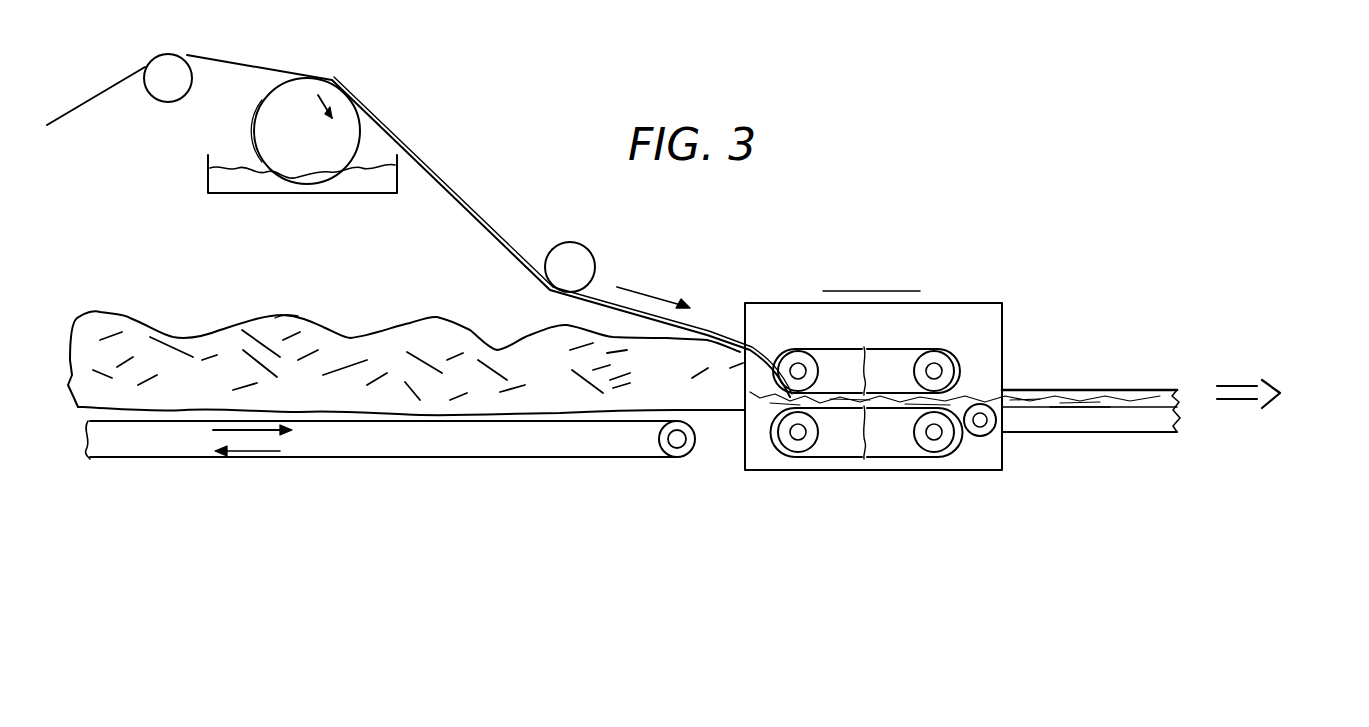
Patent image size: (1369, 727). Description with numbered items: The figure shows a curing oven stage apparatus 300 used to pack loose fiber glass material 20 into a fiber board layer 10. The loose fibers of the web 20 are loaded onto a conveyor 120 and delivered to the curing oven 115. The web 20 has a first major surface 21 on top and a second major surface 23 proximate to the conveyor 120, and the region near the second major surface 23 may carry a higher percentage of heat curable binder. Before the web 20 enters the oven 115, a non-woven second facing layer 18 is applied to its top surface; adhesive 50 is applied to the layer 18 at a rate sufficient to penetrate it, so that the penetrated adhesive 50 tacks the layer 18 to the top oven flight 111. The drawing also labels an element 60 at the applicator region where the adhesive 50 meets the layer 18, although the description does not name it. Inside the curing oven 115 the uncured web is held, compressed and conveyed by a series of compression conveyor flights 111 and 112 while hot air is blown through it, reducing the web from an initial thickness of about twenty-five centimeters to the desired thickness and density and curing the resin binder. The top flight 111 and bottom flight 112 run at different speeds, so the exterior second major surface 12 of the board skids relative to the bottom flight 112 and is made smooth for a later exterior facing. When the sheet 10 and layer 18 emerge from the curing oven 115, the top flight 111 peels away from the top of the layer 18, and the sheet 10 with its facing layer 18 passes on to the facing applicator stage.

The apparatus 300 is at (648, 617).
The second facing layer 18 is at (223, 62).
The applicator roller 60 is at (266, 137).
The adhesive 50 is at (246, 184).
The loose fiber glass material 20 is at (348, 340).
The first major surface 21 is at (287, 315).
The second major surface 23 is at (290, 407).
The conveyor 120 is at (378, 461).
The curing oven 115 is at (940, 300).
The top oven flight 111 is at (893, 347).
The bottom flight 112 is at (897, 458).
The fiber board layer 10 is at (1140, 407).
The second major surface 12 is at (1070, 407).